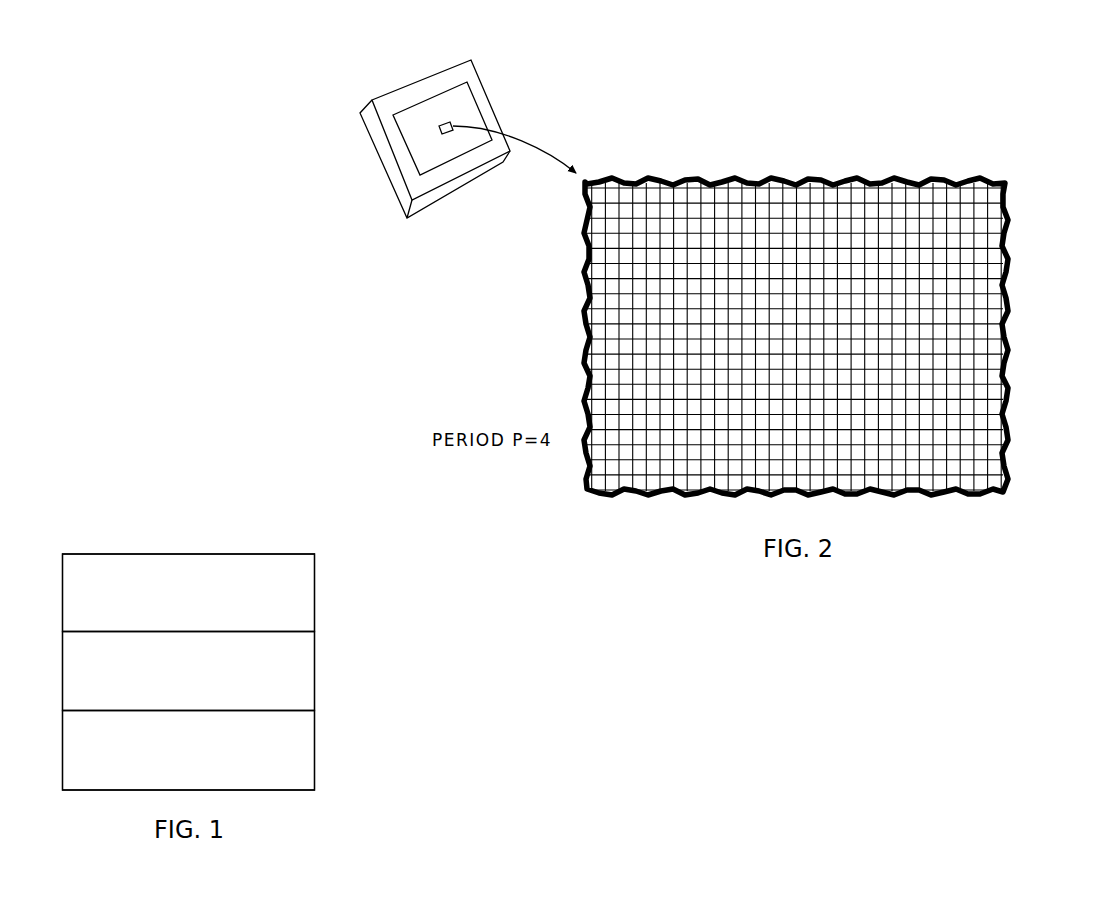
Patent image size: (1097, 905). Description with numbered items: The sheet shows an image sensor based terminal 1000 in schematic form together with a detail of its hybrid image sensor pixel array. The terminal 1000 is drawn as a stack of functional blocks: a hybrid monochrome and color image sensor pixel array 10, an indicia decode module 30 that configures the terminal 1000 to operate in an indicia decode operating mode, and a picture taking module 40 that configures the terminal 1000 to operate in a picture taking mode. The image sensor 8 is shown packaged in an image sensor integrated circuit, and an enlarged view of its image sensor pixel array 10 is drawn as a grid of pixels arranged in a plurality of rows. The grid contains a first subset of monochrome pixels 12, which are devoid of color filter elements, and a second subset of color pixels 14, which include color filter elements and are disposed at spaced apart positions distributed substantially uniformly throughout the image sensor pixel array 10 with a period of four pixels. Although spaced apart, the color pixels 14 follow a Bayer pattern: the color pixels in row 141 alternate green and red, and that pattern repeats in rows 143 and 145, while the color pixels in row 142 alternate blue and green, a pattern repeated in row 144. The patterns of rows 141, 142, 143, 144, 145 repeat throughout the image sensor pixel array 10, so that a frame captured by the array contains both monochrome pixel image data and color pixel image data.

In FIG. 1, the image sensor based terminal 1000 is at (202, 639).
In FIG. 1, the image sensor pixel array 10 is at (189, 593).
In FIG. 2, the image sensor pixel array 10 is at (463, 105).
In FIG. 1, the indicia decode module 30 is at (189, 671).
In FIG. 1, the picture taking module 40 is at (189, 751).
In FIG. 2, the image sensor 8 is at (432, 72).
In FIG. 2, the monochrome pixels 12 is at (627, 303).
In FIG. 2, the color pixels 14 is at (798, 329).
In FIG. 2, the row 141 is at (982, 213).
In FIG. 2, the row 142 is at (982, 275).
In FIG. 2, the row 143 is at (982, 335).
In FIG. 2, the row 144 is at (982, 396).
In FIG. 2, the row 145 is at (982, 454).